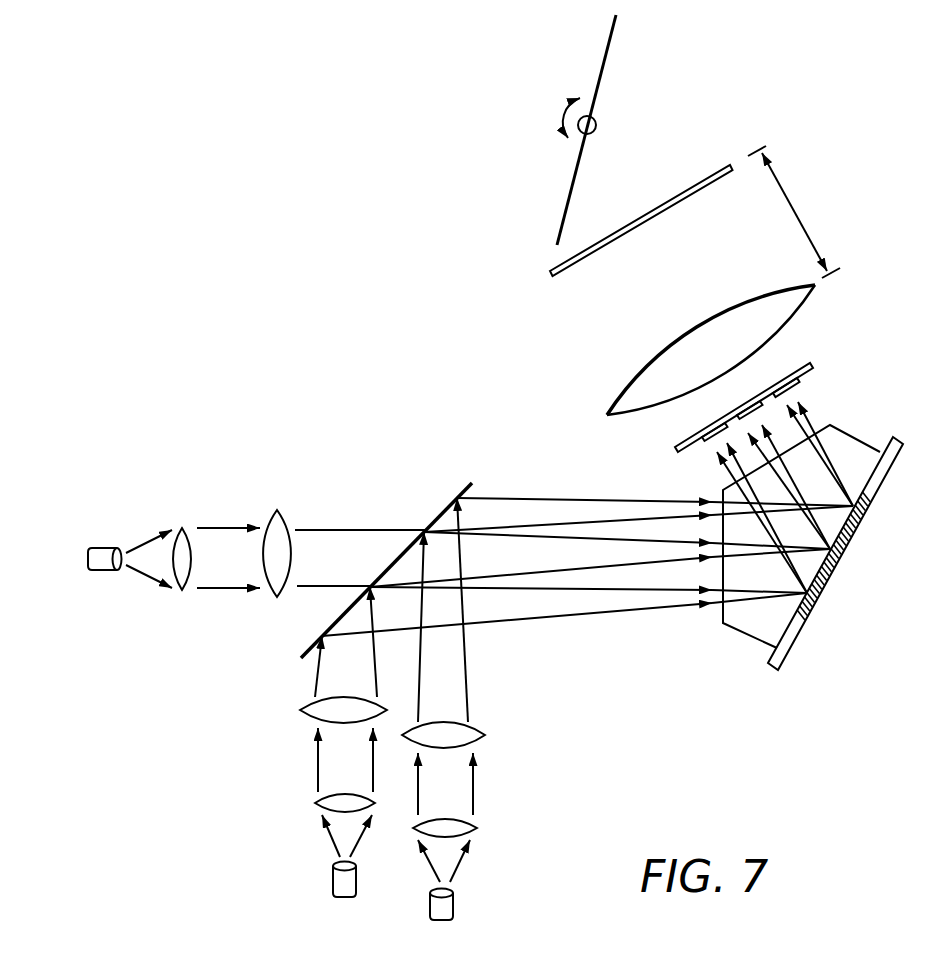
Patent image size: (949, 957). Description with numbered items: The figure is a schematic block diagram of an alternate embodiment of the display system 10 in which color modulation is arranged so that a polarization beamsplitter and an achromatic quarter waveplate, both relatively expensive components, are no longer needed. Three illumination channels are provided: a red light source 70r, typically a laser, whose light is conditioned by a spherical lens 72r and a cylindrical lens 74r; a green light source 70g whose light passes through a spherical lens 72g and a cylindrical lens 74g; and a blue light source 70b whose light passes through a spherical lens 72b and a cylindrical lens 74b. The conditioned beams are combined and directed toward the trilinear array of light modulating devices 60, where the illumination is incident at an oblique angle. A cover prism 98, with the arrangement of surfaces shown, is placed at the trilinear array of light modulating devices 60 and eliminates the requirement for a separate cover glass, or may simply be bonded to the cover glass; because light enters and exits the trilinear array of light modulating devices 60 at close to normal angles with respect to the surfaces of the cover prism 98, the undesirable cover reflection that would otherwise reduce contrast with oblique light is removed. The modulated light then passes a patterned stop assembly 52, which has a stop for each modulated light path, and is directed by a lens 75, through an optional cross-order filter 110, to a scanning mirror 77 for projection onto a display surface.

The display system 10 is at (353, 233).
The scanning mirror 77 is at (572, 190).
The cross-order filter 110 is at (563, 277).
The lens 75 is at (618, 387).
The patterned stop assembly 52 is at (806, 364).
The cover prism 98 is at (852, 437).
The trilinear array of light modulating devices 60 is at (837, 553).
The blue light source 70b is at (100, 548).
The spherical lens 72b is at (177, 530).
The cylindrical lens 74b is at (267, 512).
The red light source 70r is at (332, 882).
The spherical lens 72r is at (315, 807).
The cylindrical lens 74r is at (310, 717).
The green light source 70g is at (457, 898).
The spherical lens 72g is at (473, 825).
The cylindrical lens 74g is at (480, 725).